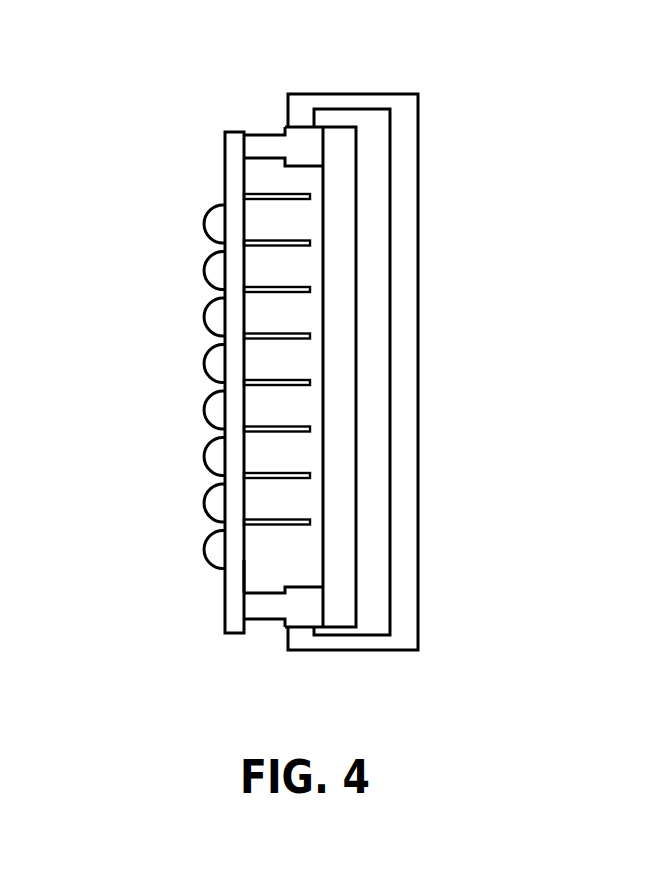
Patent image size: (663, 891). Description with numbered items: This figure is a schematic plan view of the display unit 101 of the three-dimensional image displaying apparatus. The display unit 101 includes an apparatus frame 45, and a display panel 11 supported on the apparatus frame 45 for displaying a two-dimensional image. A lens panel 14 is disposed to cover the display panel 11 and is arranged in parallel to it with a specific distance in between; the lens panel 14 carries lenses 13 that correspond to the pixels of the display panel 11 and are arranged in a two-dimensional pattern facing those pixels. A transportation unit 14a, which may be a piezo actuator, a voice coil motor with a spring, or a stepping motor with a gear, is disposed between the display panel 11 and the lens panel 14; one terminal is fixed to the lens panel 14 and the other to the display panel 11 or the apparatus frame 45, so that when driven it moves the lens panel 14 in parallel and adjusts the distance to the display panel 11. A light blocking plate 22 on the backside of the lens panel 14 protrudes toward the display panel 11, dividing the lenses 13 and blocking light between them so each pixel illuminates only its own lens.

The display unit 101 is at (276, 76).
The lens panel 14 is at (214, 152).
The transportation unit 14a is at (307, 153).
The lenses 13 is at (215, 215).
The display panel 11 is at (343, 243).
The apparatus frame 45 is at (410, 445).
The light blocking plate 22 is at (270, 568).